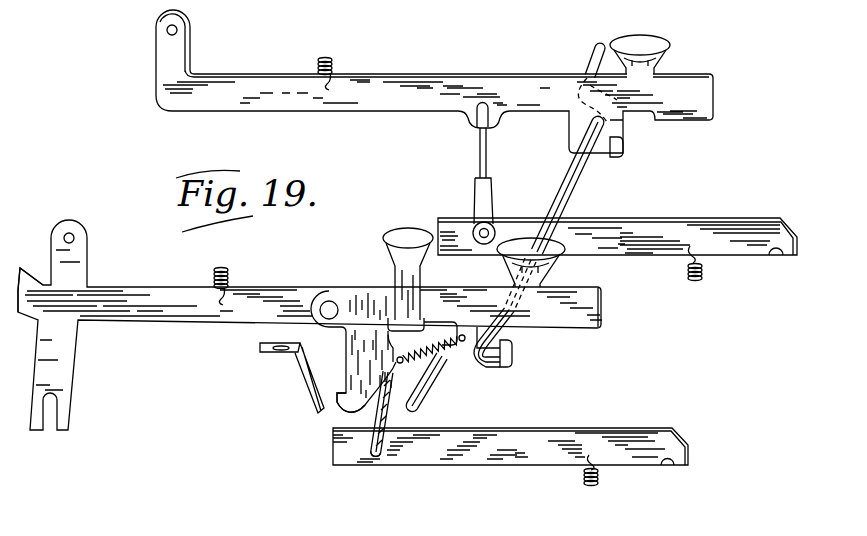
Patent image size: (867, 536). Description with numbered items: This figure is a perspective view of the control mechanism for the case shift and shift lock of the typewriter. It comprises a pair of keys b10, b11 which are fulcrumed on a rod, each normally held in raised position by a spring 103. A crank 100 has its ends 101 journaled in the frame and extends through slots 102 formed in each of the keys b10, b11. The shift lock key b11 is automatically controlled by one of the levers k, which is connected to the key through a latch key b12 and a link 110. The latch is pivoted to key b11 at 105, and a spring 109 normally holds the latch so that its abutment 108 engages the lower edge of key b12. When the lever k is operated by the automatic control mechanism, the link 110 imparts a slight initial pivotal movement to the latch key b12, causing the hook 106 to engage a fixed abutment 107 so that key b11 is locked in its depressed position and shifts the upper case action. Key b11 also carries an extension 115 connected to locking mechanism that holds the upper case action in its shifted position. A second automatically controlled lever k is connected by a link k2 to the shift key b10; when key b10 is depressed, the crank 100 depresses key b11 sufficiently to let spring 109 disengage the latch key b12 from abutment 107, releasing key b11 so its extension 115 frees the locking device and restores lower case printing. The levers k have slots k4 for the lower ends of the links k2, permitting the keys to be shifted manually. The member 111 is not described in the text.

The crank 100 is at (580, 180).
The ends of crank 101 is at (593, 62).
The slots 102 is at (622, 152).
The spring 103 is at (338, 62).
The pivot 105 is at (331, 301).
The hook 106 is at (342, 406).
The fixed abutment 107 is at (312, 386).
The abutment 108 is at (428, 306).
The spring 109 is at (437, 362).
The link 110 is at (386, 420).
The bar leg 111 is at (62, 367).
The extension 115 is at (25, 277).
The shift key b10 is at (654, 68).
The shift lock key b11 is at (530, 292).
The latch key b12 is at (393, 260).
The lever k is at (668, 238).
The link k2 is at (490, 190).
The slot k4 is at (376, 455).